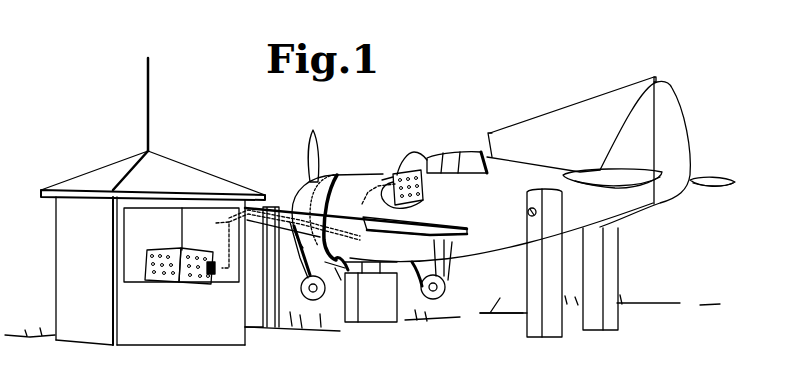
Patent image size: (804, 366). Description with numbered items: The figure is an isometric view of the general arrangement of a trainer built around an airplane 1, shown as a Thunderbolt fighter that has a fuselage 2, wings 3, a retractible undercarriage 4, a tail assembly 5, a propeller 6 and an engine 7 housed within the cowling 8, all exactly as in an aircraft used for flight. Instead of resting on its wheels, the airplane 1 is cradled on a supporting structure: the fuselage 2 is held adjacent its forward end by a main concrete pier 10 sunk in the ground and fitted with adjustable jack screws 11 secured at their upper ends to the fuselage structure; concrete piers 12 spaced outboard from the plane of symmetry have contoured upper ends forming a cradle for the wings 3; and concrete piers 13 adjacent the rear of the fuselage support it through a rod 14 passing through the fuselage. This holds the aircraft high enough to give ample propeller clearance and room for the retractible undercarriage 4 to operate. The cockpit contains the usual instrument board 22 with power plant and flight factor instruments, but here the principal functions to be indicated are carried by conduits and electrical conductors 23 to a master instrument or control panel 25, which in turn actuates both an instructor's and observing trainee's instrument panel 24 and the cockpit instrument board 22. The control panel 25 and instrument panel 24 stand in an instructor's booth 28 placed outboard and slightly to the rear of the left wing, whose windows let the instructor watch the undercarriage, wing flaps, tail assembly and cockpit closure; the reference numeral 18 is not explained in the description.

The airplane 1 is at (380, 147).
The fuselage 2 is at (369, 180).
The wings 3 is at (375, 234).
The retractible undercarriage 4 is at (302, 288).
The tail assembly 5 is at (604, 136).
The propeller 6 is at (320, 140).
The engine 7 is at (300, 193).
The cowling 8 is at (333, 177).
The main concrete pier 10 is at (380, 320).
The adjustable jack screws 11 is at (372, 280).
The concrete piers 12 is at (268, 336).
The concrete piers 13 is at (590, 273).
The rod 14 is at (527, 212).
The wheel clamp 18 is at (325, 281).
The instrument board 22 is at (423, 175).
The conduits and electrical conductors 23 is at (368, 203).
The instructor's and observing trainee's instrument panel 24 is at (207, 250).
The master instrument or control panel 25 is at (164, 252).
The instructor's booth 28 is at (198, 178).